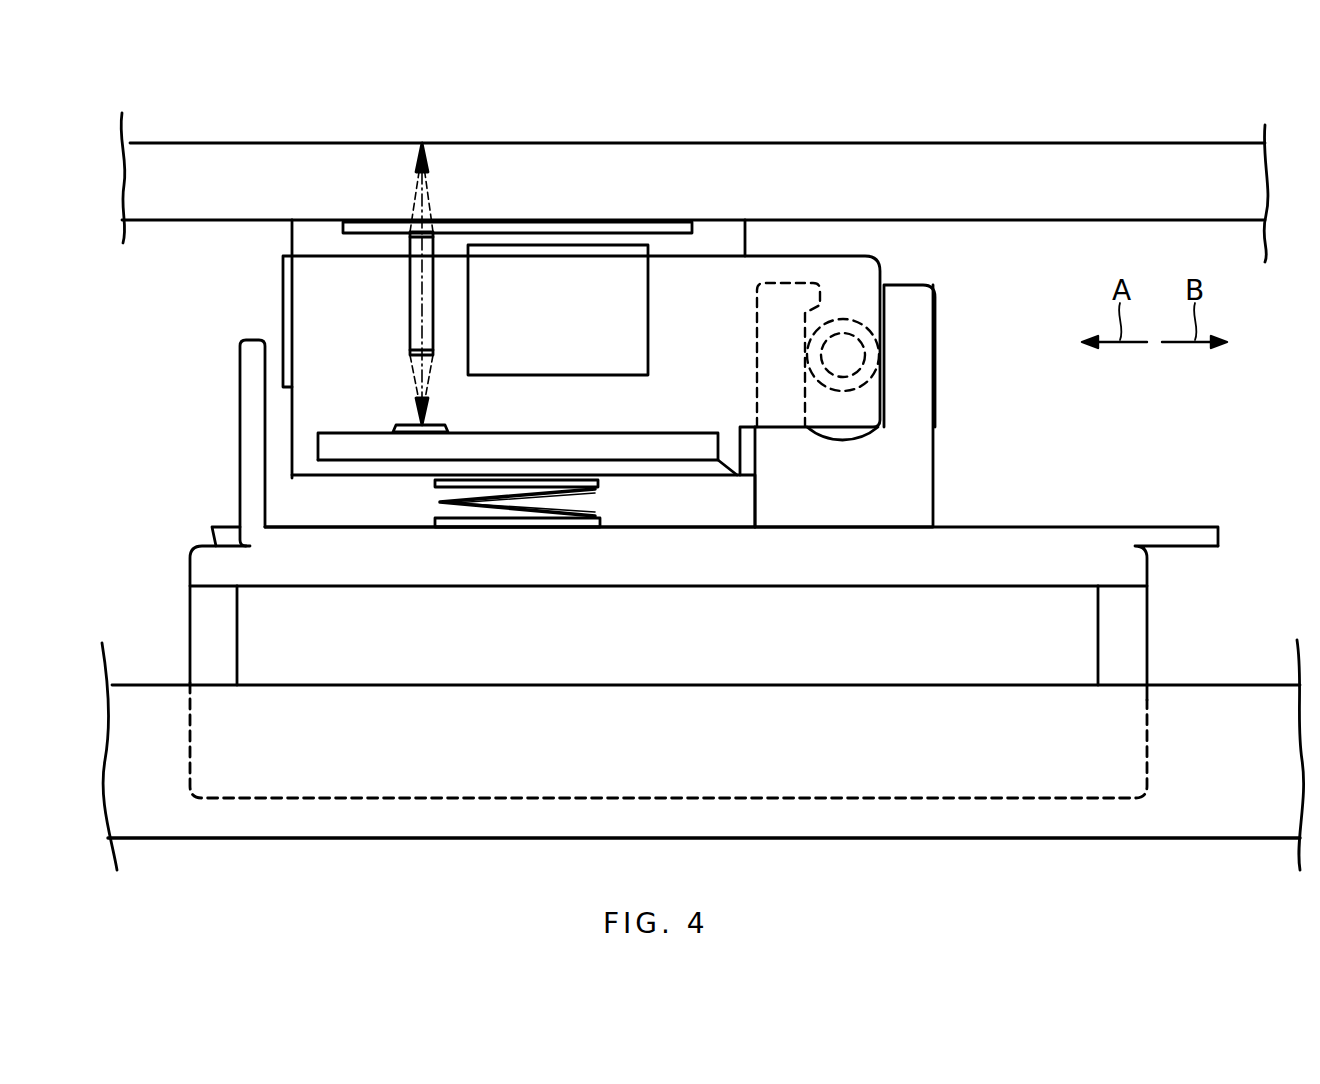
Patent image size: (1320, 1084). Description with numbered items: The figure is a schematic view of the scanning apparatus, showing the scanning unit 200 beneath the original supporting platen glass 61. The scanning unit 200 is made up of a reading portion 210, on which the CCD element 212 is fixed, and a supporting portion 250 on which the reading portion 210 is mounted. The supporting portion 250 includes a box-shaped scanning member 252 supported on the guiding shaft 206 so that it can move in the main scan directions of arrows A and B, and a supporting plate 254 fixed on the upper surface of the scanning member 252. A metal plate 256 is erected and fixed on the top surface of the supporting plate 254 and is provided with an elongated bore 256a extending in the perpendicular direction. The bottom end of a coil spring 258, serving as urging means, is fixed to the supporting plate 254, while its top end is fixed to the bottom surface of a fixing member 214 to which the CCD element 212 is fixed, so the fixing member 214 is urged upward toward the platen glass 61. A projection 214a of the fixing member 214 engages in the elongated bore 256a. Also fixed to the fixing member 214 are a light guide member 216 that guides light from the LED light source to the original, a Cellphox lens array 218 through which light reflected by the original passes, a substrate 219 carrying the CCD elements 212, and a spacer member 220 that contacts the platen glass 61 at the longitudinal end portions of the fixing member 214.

The original supporting platen glass 61 is at (1053, 165).
The scanning unit 200 is at (561, 319).
The guiding shaft 206 is at (1223, 700).
The reading portion 210 is at (284, 295).
The CCD element 212 is at (404, 425).
The fixing member 214 is at (322, 467).
The projection 214a is at (873, 380).
The light guide member 216 is at (612, 307).
The Cellphox lens array 218 is at (415, 317).
The substrate 219 is at (622, 448).
The spacer member 220 is at (713, 233).
The supporting portion 250 is at (733, 614).
The scanning member 252 is at (1133, 612).
The supporting plate 254 is at (1110, 538).
The metal plate 256 is at (910, 367).
The elongated bore 256a is at (846, 310).
The coil spring 258 is at (437, 503).